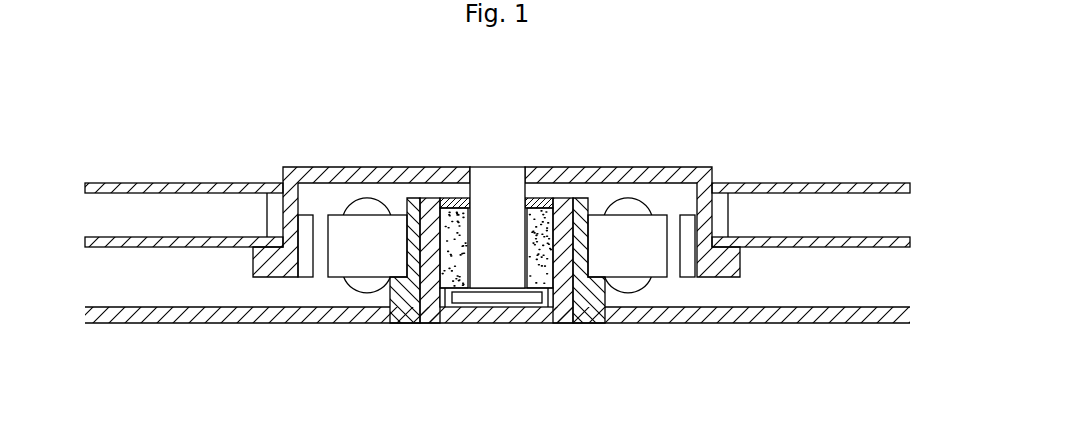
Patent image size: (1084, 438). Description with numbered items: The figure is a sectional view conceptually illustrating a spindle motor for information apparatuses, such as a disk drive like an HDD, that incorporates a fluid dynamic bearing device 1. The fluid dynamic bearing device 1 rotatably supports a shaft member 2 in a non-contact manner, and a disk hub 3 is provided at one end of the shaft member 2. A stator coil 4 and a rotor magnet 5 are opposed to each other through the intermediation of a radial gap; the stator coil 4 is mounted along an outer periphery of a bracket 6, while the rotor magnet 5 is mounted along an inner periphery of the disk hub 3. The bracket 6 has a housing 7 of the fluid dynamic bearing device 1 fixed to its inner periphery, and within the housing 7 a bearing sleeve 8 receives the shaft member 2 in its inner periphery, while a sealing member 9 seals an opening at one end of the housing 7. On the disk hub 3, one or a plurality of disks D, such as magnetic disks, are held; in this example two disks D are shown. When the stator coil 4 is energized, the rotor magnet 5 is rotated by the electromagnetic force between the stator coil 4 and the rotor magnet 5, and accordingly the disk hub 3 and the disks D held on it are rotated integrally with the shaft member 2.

The fluid dynamic bearing device 1 is at (553, 196).
The shaft member 2 is at (505, 167).
The disk hub 3 is at (688, 175).
The stator coil 4 is at (661, 270).
The rotor magnet 5 is at (688, 270).
The bracket 6 is at (356, 315).
The housing 7 is at (431, 298).
The bearing sleeve 8 is at (541, 198).
The sealing member 9 is at (453, 198).
The disk D is at (828, 180).